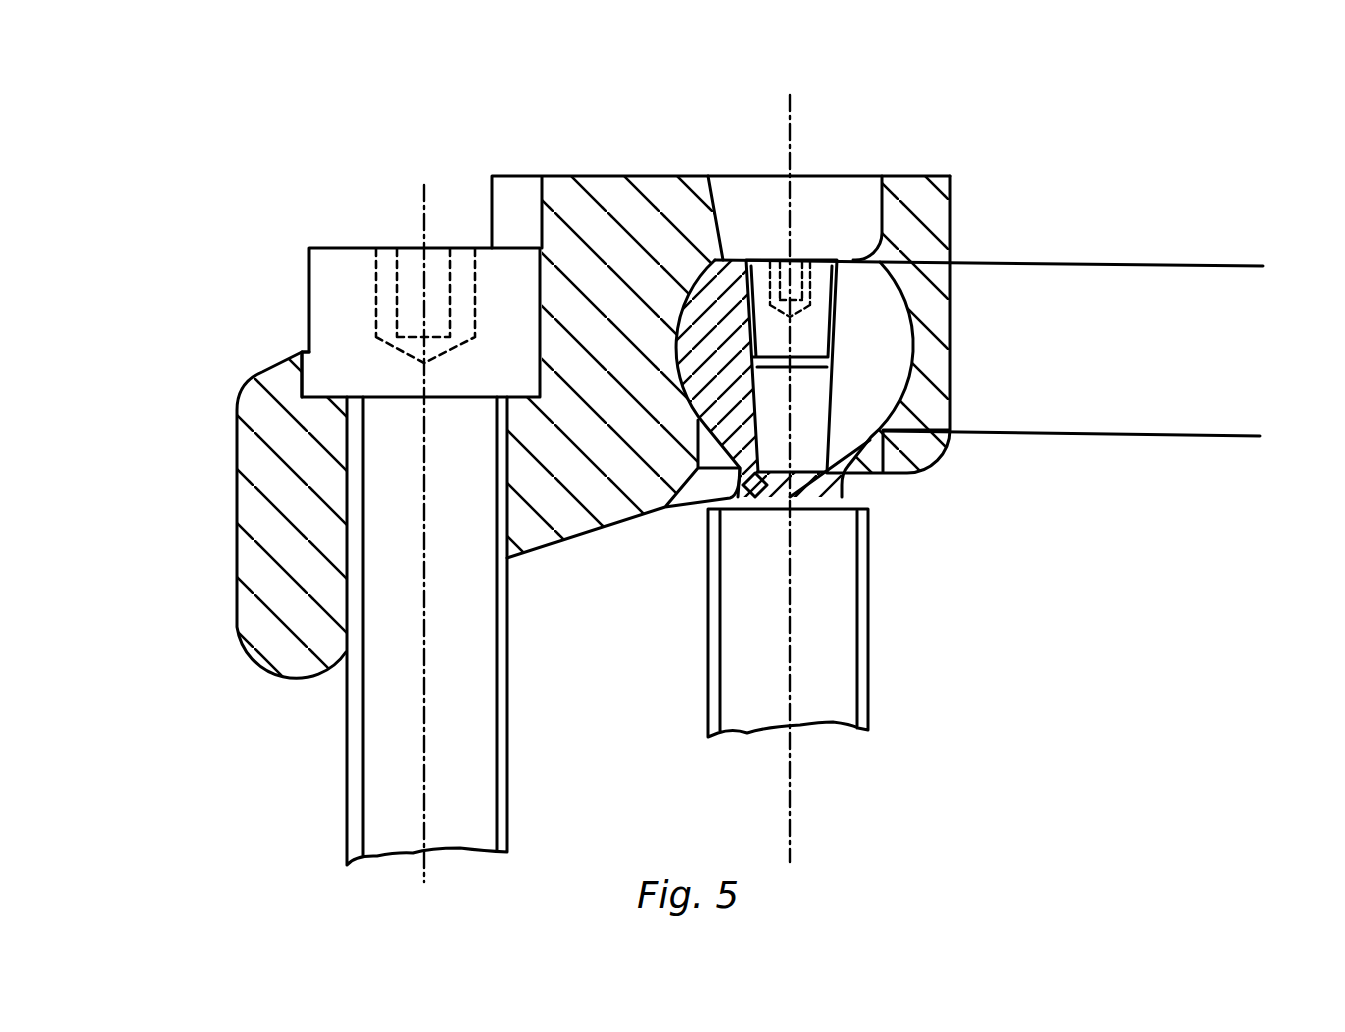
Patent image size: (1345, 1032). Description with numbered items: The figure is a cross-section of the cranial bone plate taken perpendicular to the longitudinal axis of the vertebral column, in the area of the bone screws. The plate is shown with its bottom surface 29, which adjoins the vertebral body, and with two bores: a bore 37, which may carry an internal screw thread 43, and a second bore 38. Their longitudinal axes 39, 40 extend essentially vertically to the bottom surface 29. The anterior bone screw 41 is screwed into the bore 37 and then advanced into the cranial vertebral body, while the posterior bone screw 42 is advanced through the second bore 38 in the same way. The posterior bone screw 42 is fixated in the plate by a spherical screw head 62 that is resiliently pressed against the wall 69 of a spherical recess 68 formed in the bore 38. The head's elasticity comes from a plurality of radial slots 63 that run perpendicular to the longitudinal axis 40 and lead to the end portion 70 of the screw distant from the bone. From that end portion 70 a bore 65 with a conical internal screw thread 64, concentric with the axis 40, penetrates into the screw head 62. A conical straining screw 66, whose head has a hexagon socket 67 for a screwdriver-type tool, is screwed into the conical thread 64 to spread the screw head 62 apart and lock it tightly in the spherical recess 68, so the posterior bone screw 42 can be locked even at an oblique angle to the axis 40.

The bottom surface 29 is at (568, 535).
The bore 37 is at (298, 350).
The second bore 38 is at (853, 197).
The longitudinal axis 39 is at (420, 208).
The longitudinal axis 40 is at (800, 104).
The anterior bone screw 41 is at (392, 753).
The posterior bone screw 42 is at (833, 672).
The internal screw thread 43 is at (340, 545).
The spherical screw head 62 is at (708, 318).
The radial slots 63 is at (873, 340).
The conical internal screw thread 64 is at (833, 378).
The bore 65 is at (808, 407).
The conical straining screw 66 is at (818, 305).
The hexagon socket 67 is at (840, 262).
The spherical recess 68 is at (1265, 267).
The wall 69 is at (810, 325).
The end portion 70 is at (727, 258).